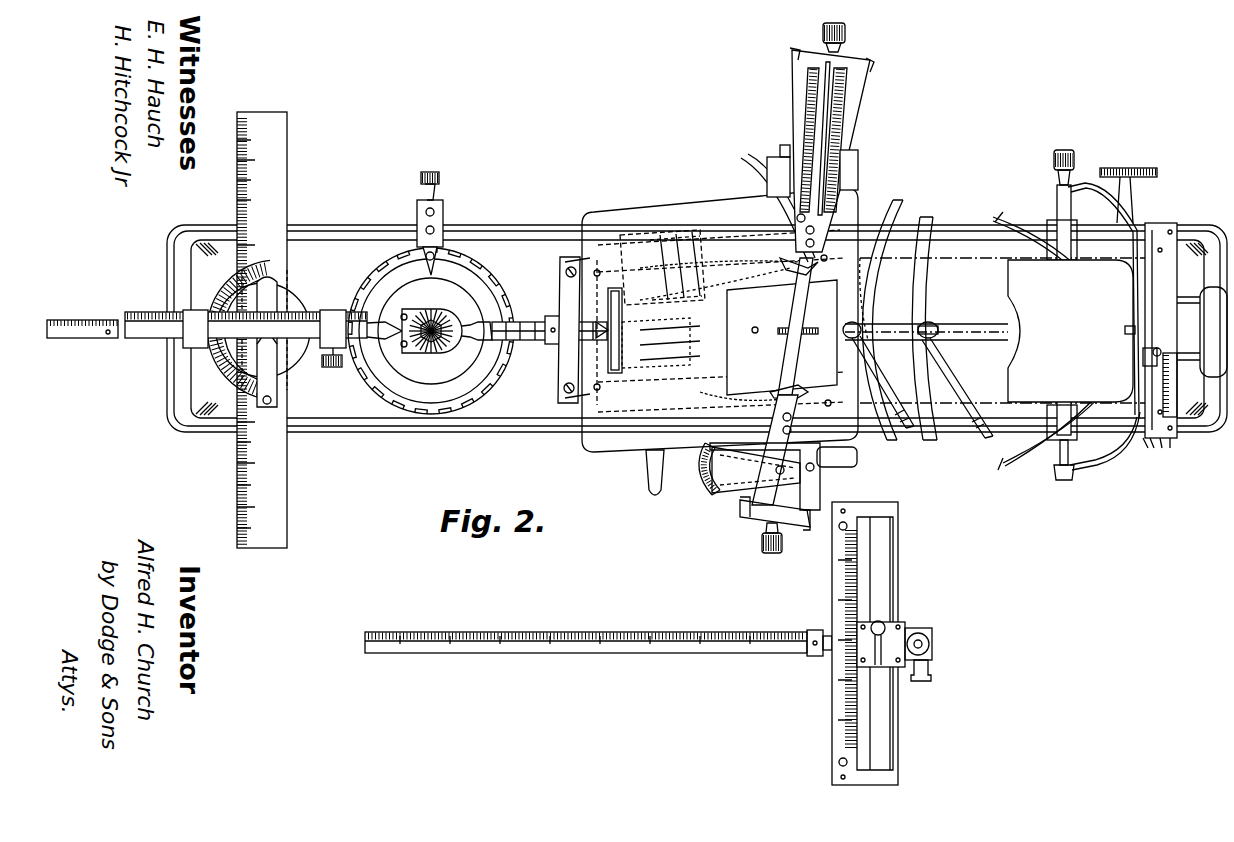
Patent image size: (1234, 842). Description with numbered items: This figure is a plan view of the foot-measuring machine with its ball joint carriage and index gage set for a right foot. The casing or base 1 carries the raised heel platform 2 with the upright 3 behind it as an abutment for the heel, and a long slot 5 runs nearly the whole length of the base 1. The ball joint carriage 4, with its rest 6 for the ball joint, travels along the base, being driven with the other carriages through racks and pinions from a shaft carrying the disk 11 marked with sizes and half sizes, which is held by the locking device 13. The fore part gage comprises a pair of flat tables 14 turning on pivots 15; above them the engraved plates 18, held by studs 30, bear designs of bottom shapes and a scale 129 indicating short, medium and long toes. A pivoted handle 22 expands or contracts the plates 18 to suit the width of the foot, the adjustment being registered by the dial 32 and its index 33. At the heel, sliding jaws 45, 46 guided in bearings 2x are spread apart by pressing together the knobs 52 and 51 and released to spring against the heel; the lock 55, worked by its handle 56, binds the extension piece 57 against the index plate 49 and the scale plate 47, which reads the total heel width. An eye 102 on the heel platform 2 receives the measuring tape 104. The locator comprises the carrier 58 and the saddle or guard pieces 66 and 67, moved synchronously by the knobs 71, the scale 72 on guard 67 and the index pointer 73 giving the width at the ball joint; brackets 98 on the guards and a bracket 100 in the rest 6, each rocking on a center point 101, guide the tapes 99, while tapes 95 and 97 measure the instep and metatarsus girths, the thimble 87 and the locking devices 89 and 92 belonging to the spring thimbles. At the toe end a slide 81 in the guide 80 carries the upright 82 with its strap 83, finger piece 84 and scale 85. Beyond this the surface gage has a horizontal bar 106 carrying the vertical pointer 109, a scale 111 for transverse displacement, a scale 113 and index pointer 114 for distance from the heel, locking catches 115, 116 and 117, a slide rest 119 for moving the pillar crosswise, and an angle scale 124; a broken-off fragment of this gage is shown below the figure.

The casing or base 1 is at (474, 432).
The heel platform 2 is at (1070, 331).
The bearings 2x is at (1050, 228).
The upright 3 is at (1146, 290).
The ball joint carriage 4 is at (767, 165).
The slot 5 is at (963, 335).
The rest 6 is at (782, 337).
The disk 11 is at (472, 255).
The locking device 13 is at (442, 210).
The flat tables 14 is at (632, 210).
The pivots 15 is at (570, 313).
The engraved plates 18 is at (720, 316).
The pivoted handle 22 is at (648, 492).
The studs 30 is at (592, 242).
The dial 32 is at (704, 475).
The index 33 is at (735, 483).
The sliding jaw 45 is at (1058, 400).
The sliding jaw 46 is at (1120, 216).
The scale plate 47 is at (1168, 446).
The index plate 49 is at (1168, 350).
The knob 51 is at (1212, 400).
The knob 52 is at (1200, 235).
The lock 55 is at (1150, 352).
The handle 56 is at (1147, 445).
The extension piece 57 is at (1150, 366).
The carrier 58 is at (858, 160).
The saddle or guard piece 66 is at (798, 538).
The saddle or guard piece 67 is at (803, 58).
The knobs 71 is at (847, 33).
The index scale 72 is at (810, 104).
The index pointer 73 is at (842, 82).
The guide 80 is at (548, 318).
The slide 81 is at (520, 342).
The upright 82 is at (642, 300).
The sliding member or strap 83 is at (600, 389).
The finger piece 84 is at (618, 350).
The scale 85 is at (520, 320).
The thimble 87 is at (934, 324).
The locking device 89 is at (956, 388).
The locking device 92 is at (878, 380).
The tape measure 95 is at (926, 283).
The tape measure 97 is at (866, 296).
The bracket or mounting 98 is at (782, 268).
The tape measure 99 is at (742, 160).
The bracket or mounting 100 is at (778, 333).
The center point 101 is at (790, 262).
The eye or loop 102 is at (1125, 330).
The measuring tape 104 is at (1097, 278).
The horizontal bar 106 is at (88, 340).
The vertical pointer 109 is at (932, 644).
The scale 111 is at (838, 592).
The scale 113 is at (526, 630).
The index pointer 114 is at (270, 322).
The thumbscrew or locking catch 115 is at (930, 681).
The thumbscrew or locking catch 116 is at (884, 622).
The thumbscrew or locking catch 117 is at (333, 368).
The slide rest 119 is at (288, 490).
The scale 124 is at (215, 378).
The scale 129 is at (618, 237).